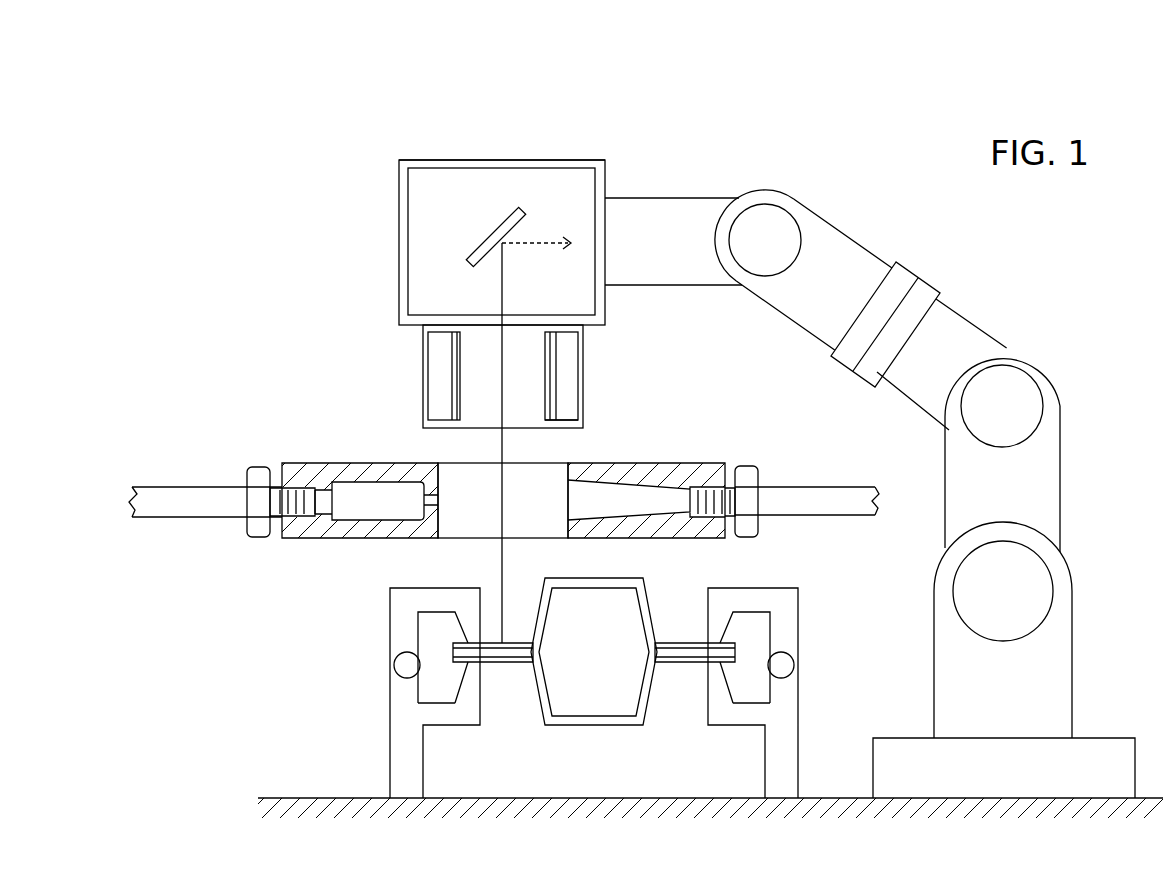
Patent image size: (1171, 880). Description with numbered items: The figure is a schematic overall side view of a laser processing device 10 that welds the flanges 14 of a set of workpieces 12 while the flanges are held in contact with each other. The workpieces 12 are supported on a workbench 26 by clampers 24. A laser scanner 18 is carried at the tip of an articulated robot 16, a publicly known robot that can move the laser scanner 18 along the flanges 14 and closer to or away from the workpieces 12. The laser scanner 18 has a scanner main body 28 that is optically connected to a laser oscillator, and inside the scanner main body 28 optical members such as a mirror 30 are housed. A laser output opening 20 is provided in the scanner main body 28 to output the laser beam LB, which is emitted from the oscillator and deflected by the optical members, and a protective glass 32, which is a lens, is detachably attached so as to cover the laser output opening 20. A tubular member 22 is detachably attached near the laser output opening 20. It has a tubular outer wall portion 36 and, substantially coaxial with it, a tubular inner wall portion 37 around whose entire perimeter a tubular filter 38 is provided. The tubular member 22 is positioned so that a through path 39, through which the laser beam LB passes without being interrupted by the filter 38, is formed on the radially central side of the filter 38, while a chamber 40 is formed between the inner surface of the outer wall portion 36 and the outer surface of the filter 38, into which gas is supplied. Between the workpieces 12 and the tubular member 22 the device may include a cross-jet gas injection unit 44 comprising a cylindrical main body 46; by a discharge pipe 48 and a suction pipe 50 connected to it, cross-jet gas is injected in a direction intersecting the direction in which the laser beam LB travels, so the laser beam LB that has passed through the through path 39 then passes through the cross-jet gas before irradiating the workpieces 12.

The laser processing device 10 is at (1094, 232).
The workpieces 12 is at (668, 603).
The flanges 14 is at (513, 641).
The articulated robot 16 is at (820, 188).
The laser scanner 18 is at (559, 156).
The laser output opening 20 is at (540, 322).
The tubular member 22 is at (410, 345).
The clampers 24 is at (432, 588).
The workbench 26 is at (334, 797).
The scanner main body 28 is at (431, 160).
The mirror 30 is at (500, 222).
The protective glass 32 is at (482, 322).
The outer wall portion 36 is at (571, 414).
The inner wall portion 37 is at (540, 352).
The filter 38 is at (450, 394).
The through path 39 is at (522, 367).
The chamber 40 is at (446, 402).
The cross-jet gas injection unit 44 is at (313, 441).
The cylindrical main body 46 is at (556, 539).
The discharge pipe 48 is at (197, 518).
The suction pipe 50 is at (798, 517).
The laser beam LB is at (501, 445).